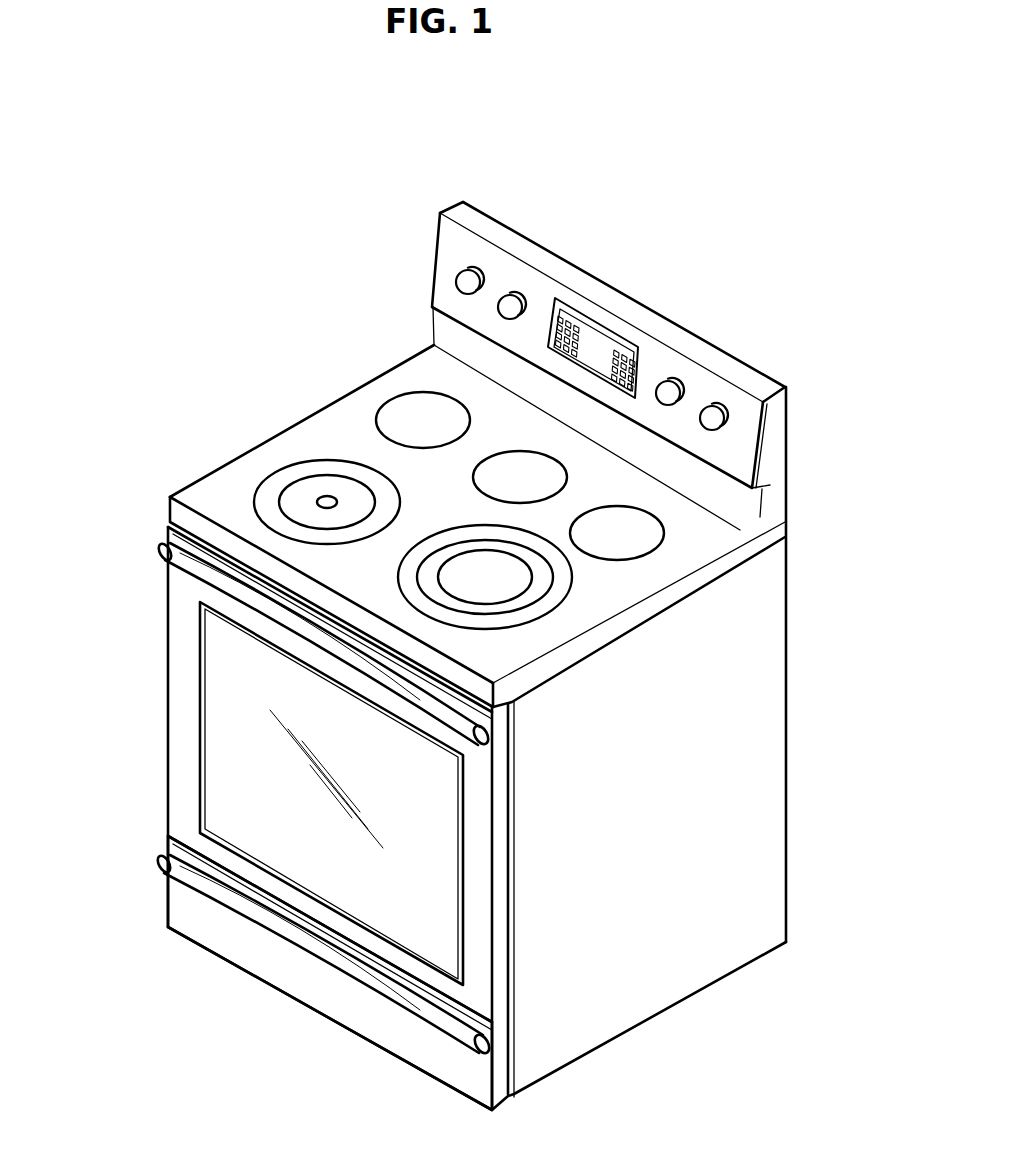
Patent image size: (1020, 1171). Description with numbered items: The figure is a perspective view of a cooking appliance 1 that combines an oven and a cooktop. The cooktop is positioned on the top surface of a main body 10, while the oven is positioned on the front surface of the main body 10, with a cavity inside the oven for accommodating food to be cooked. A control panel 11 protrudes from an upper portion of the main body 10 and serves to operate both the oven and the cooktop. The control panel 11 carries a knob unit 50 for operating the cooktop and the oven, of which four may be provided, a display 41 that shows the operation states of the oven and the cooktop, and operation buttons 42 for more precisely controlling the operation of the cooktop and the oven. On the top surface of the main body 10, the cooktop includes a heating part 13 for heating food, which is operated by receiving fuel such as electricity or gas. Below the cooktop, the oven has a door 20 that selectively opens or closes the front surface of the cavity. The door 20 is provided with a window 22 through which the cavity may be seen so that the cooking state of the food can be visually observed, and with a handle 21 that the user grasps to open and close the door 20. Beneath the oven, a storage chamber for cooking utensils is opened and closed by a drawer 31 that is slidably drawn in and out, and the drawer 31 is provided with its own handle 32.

The cooking appliance 1 is at (437, 153).
The main body 10 is at (605, 1000).
The control panel 11 is at (540, 287).
The heating part 13 is at (303, 487).
The door 20 is at (180, 713).
The handle 21 is at (197, 578).
The window 22 is at (227, 750).
The drawer 31 is at (220, 942).
The handle 32 is at (198, 890).
The display 41 is at (592, 343).
The operation buttons 42 is at (630, 357).
The knob unit 50 is at (452, 275).